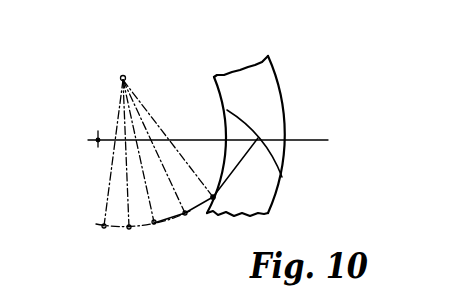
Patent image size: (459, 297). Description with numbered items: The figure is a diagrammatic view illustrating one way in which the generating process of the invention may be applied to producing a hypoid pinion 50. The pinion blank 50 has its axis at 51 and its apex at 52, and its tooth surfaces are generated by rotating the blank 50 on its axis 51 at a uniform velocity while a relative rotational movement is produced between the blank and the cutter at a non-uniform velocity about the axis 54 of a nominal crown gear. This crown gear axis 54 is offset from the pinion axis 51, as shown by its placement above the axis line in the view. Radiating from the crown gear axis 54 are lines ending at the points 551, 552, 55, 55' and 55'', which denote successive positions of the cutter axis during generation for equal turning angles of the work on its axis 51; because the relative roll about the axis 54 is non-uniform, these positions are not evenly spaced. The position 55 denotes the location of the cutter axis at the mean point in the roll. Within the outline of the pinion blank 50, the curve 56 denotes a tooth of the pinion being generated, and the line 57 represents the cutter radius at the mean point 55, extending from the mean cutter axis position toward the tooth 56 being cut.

The hypoid pinion 50 is at (272, 93).
The pinion axis 51 is at (306, 140).
The pinion apex 52 is at (95, 138).
The nominal crown gear axis 54 is at (124, 76).
The cutter axis position at mean point 55 is at (166, 235).
The successive cutter axis position 55' is at (202, 228).
The successive cutter axis position 55'' is at (234, 198).
The successive cutter axis position 551 is at (104, 228).
The successive cutter axis position 552 is at (129, 229).
The pinion tooth 56 is at (271, 160).
The cutter radius 57 is at (218, 174).